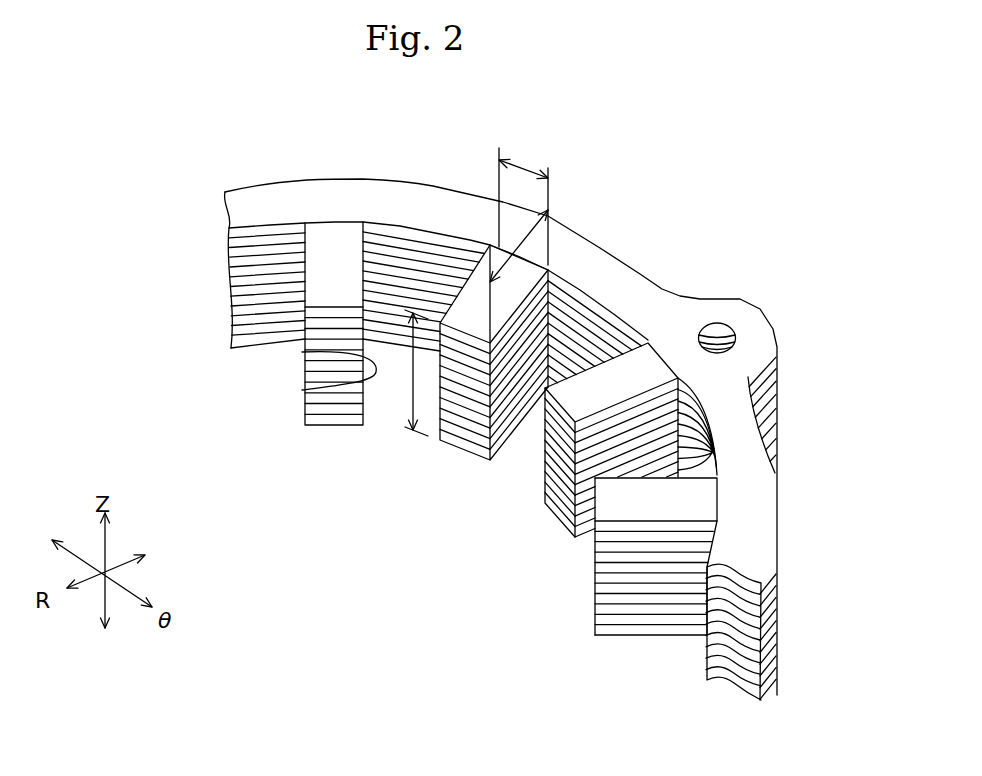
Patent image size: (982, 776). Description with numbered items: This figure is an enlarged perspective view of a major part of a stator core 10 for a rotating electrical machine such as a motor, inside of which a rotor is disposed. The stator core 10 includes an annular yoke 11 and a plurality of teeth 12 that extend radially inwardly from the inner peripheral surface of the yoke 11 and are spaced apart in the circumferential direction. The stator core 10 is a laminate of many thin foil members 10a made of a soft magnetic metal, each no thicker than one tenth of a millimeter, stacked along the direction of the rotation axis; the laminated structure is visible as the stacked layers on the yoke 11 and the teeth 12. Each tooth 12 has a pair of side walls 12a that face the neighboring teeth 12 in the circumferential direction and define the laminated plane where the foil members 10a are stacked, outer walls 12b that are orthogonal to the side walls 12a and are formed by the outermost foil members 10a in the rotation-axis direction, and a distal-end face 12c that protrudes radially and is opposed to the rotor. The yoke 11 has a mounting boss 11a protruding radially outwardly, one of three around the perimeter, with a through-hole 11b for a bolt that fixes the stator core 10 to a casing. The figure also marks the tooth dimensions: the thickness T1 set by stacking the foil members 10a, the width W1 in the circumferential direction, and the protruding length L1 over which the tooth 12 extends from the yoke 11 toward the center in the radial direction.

The stator core 10 is at (179, 163).
The foil member 10a is at (238, 332).
The yoke 11 is at (388, 194).
The mounting boss 11a is at (735, 307).
The through-hole 11b is at (712, 323).
The tooth 12 is at (316, 443).
The side wall 12a is at (302, 352).
The outer wall 12b is at (331, 285).
The distal-end face 12c is at (548, 498).
The width W1 is at (528, 160).
The protruding length L1 is at (548, 248).
The thickness T1 is at (412, 383).